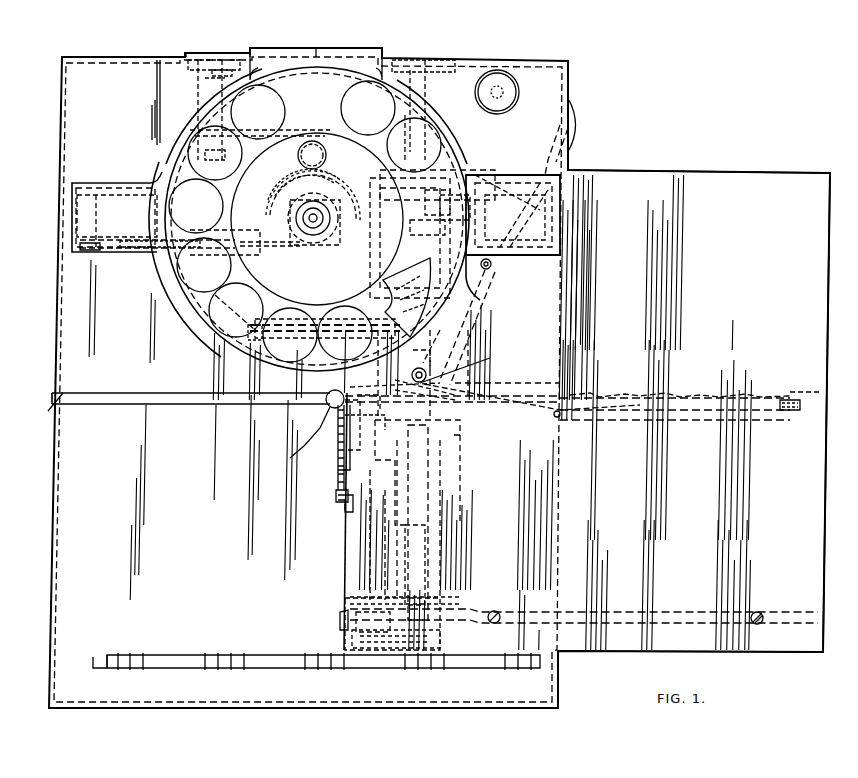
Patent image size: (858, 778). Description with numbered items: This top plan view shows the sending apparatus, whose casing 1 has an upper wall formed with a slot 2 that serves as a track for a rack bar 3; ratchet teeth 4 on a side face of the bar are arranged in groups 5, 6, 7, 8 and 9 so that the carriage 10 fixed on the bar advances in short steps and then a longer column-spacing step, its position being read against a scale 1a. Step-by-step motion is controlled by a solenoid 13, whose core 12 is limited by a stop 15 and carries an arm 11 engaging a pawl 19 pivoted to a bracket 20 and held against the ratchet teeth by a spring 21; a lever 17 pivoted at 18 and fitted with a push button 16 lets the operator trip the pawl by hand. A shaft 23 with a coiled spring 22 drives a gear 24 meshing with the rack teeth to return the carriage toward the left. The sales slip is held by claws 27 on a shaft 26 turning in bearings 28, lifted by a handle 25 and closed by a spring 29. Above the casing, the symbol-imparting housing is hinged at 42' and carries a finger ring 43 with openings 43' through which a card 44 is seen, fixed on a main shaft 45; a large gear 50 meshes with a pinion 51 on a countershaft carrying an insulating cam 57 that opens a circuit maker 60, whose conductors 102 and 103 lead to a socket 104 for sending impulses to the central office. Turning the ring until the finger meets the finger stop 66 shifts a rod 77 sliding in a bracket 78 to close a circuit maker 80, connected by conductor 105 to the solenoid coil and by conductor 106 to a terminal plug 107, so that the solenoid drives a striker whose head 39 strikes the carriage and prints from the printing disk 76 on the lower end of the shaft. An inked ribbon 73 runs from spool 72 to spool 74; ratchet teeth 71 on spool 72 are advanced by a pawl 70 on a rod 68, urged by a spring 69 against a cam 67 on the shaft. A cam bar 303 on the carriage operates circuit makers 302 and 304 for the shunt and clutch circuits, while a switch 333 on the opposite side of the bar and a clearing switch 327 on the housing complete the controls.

The casing 1 is at (52, 630).
The scale 1a is at (126, 645).
The slot 2 is at (75, 393).
The rack bar 3 is at (788, 408).
The ratchet teeth 4 is at (800, 395).
The group of ratchet teeth 5 is at (362, 410).
The group of ratchet teeth 6 is at (505, 398).
The group of ratchet teeth 7 is at (608, 398).
The group of ratchet teeth 8 is at (685, 396).
The group of ratchet teeth 9 is at (771, 396).
The carriage plate 10 is at (659, 411).
The arm 11 is at (383, 272).
The core or armature 12 is at (420, 448).
The solenoid 13 is at (385, 540).
The stop or plug 15 is at (410, 552).
The push button 16 is at (583, 130).
The rocking arm or lever 17 is at (552, 140).
The pivot 18 is at (490, 272).
The pawl 19 is at (432, 378).
The bracket 20 is at (400, 380).
The spring 21 is at (470, 390).
The spring 22 is at (390, 193).
The shaft 23 is at (325, 412).
The gear 24 is at (338, 462).
The handle 25 is at (300, 455).
The shaft 26 is at (338, 480).
The claws or grippers 27 is at (342, 508).
The bearings 28 is at (340, 490).
The spring 29 is at (295, 450).
The head 39 is at (468, 222).
The hinge 42' is at (308, 189).
The finger engaging ring or disk 43 is at (339, 202).
The openings 43' is at (269, 78).
The card 44 is at (255, 110).
The main shaft 45 is at (312, 230).
The large gear 50 is at (281, 190).
The pinion 51 is at (302, 150).
The cam 57 is at (302, 162).
The circuit-maker and breaker 60 is at (215, 138).
The finger stop 66 is at (395, 300).
The cam 67 is at (330, 236).
The rod 68 is at (250, 242).
The spring 69 is at (205, 248).
The spring-pressed pawl 70 is at (138, 252).
The ratchet teeth 71 is at (88, 250).
The spool 72 is at (117, 212).
The inked ribbon 73 is at (405, 205).
The spool 74 is at (513, 215).
The printing disk 76 is at (215, 295).
The rod 77 is at (420, 225).
The bracket 78 is at (492, 264).
The resilient circuit maker 80 is at (290, 335).
The conductor 102 is at (205, 88).
The conductor 103 is at (212, 73).
The socket 104 is at (193, 55).
The conductor 105 is at (415, 90).
The conductor 106 is at (428, 114).
The terminal plug 107 is at (432, 60).
The circuit maker 302 is at (395, 647).
The cam bar 303 is at (346, 620).
The circuit maker 304 is at (356, 632).
The switch 327 is at (510, 78).
The switch 333 is at (355, 603).